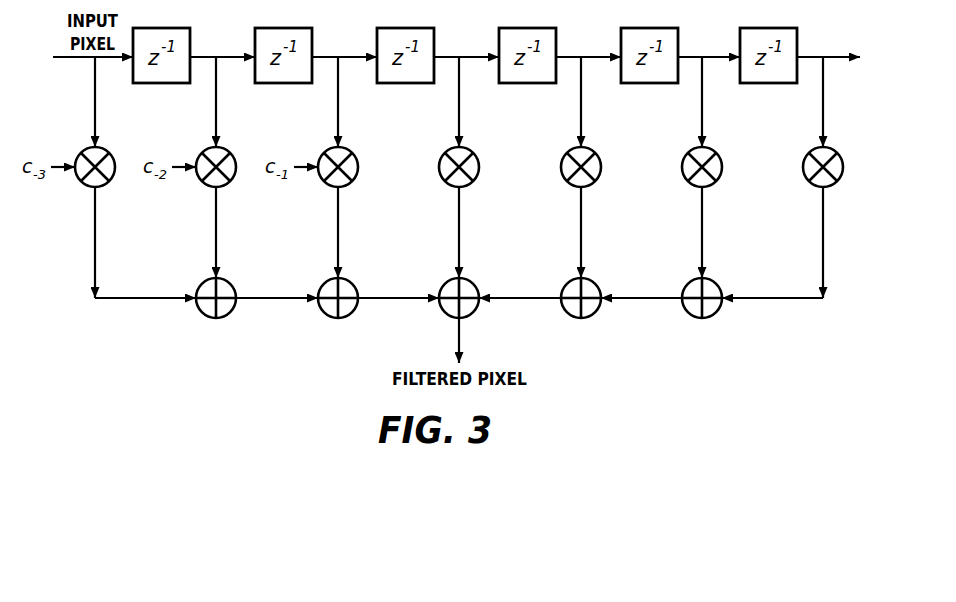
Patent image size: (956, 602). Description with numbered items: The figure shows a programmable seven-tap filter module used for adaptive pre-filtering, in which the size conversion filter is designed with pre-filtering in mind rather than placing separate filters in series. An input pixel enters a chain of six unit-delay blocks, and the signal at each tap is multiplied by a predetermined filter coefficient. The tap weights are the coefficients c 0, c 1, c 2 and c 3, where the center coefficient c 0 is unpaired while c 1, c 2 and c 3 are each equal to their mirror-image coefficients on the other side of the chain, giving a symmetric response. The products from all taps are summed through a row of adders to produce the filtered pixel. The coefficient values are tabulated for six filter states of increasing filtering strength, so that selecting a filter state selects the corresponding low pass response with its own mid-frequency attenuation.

The multiplier with coefficient c0 0 is at (439, 167).
The multiplier with coefficient c1 1 is at (561, 167).
The multiplier with coefficient c2 2 is at (682, 167).
The multiplier with coefficient c3 3 is at (803, 167).